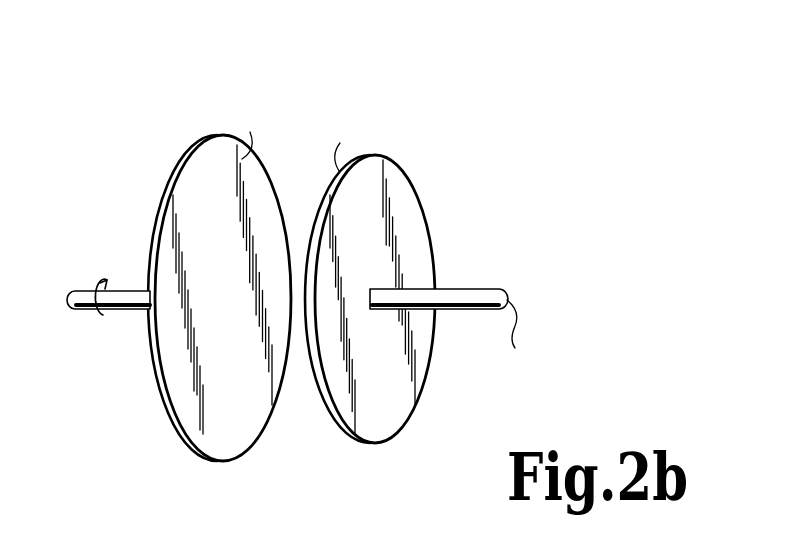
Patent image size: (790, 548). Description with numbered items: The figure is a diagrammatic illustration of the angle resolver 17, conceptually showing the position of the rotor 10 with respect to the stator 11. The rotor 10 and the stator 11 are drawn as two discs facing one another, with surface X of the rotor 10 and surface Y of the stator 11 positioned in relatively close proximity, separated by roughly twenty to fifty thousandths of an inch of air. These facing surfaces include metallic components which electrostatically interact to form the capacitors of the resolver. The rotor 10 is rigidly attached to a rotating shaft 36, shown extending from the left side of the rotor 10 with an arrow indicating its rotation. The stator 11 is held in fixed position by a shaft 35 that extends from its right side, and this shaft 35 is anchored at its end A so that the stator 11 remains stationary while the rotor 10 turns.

The angle resolver 17 is at (338, 89).
The rotor 10 is at (211, 463).
The stator 11 is at (365, 446).
The shaft 35 is at (421, 300).
The rotating shaft 36 is at (130, 310).